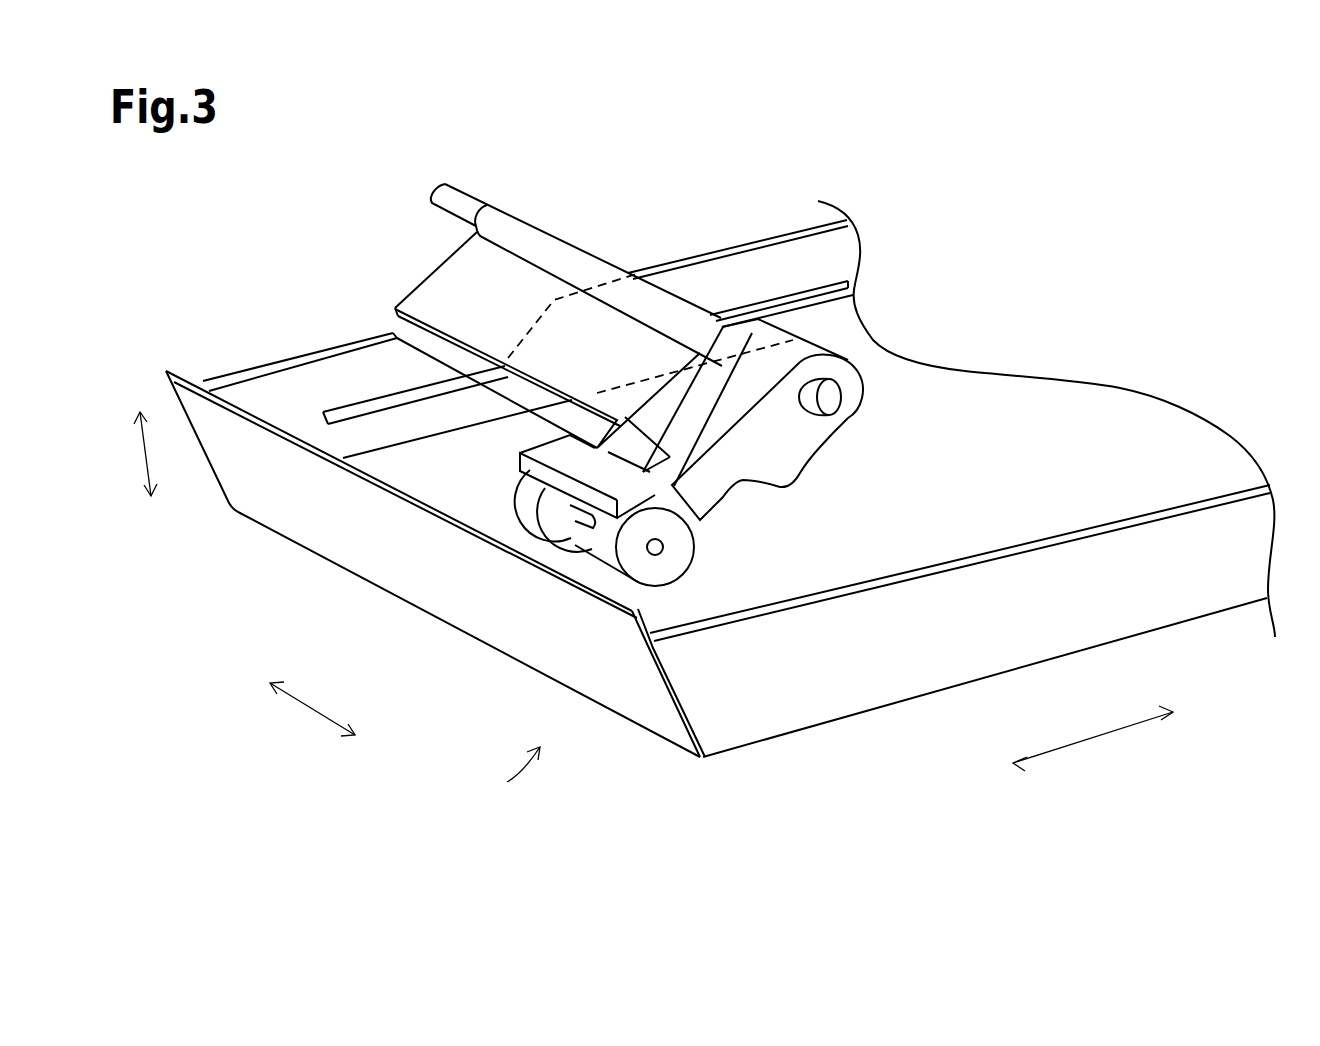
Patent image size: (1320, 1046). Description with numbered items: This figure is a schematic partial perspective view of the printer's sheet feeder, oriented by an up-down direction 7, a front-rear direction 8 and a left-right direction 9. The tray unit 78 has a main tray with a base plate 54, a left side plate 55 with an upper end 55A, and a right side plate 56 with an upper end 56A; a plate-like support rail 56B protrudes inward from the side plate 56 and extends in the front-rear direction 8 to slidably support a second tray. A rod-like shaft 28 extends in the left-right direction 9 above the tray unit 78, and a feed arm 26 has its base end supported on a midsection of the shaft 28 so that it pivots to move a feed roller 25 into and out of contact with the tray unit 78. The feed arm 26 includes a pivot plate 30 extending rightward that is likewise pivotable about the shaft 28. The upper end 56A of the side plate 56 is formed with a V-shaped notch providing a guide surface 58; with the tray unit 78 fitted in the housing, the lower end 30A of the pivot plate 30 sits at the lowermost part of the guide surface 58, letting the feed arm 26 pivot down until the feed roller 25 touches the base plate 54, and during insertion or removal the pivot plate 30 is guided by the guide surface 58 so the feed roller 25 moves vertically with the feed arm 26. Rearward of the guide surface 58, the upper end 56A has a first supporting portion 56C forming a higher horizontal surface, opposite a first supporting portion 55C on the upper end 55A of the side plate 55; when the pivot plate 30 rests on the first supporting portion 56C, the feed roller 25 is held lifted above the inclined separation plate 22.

The up-down direction 7 is at (143, 455).
The front-rear direction 8 is at (1090, 740).
The left-right direction 9 is at (298, 706).
The inclined separation plate 22 is at (330, 510).
The feed roller 25 is at (517, 493).
The feed arm 26 is at (855, 411).
The shaft 28 is at (452, 190).
The pivot plate 30 is at (447, 260).
The lower end of the pivot plate 30A is at (400, 320).
The base plate 54 is at (892, 519).
The left side plate 55 is at (762, 693).
The upper end of the left side plate 55A is at (1073, 530).
The first supporting portion 55C is at (737, 617).
The right side plate 56 is at (790, 258).
The upper end of the side plate 56A is at (715, 252).
The support rail 56B is at (838, 276).
The first supporting portion 56C is at (257, 364).
The guide surface 58 is at (443, 338).
The tray unit 78 is at (510, 770).